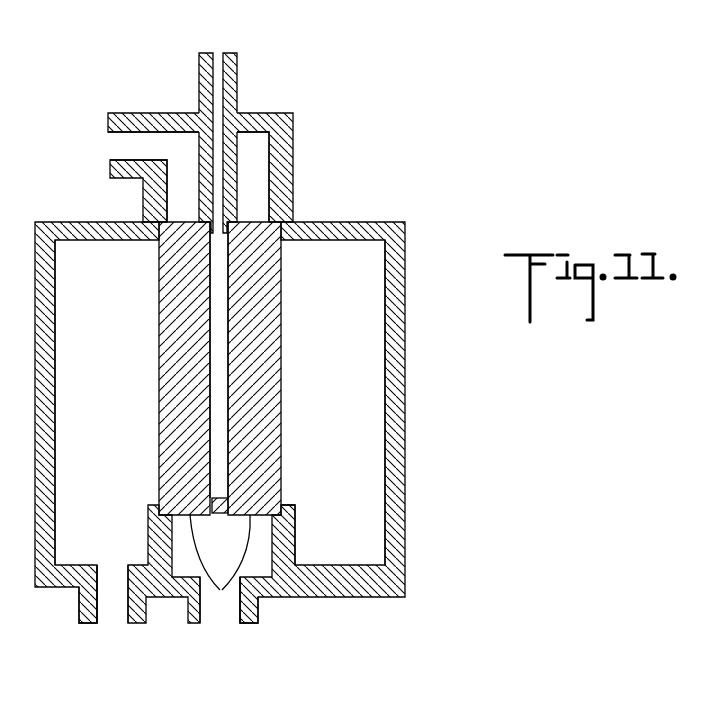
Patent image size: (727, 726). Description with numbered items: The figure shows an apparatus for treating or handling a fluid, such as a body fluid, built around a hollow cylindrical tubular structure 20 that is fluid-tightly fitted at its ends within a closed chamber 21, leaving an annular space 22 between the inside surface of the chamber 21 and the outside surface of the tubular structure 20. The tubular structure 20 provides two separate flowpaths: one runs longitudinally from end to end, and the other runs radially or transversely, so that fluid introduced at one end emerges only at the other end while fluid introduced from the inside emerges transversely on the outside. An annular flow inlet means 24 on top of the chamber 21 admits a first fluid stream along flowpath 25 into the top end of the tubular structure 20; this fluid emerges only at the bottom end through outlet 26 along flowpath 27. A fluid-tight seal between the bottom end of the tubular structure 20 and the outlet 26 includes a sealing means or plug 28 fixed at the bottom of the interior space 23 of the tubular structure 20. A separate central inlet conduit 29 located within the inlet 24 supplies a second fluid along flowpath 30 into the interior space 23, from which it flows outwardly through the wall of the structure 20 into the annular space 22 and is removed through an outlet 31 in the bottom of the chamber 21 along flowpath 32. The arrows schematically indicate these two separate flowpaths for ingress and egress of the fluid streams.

The tubular structure 20 is at (283, 292).
The closed chamber 21 is at (405, 403).
The annular space 22 is at (320, 357).
The interior space 23 is at (220, 400).
The annular flow inlet means 24 is at (135, 113).
The flowpath 25 is at (189, 194).
The outlet 26 is at (281, 433).
The flowpath 27 is at (222, 590).
The sealing means or plug 28 is at (224, 497).
The central inlet conduit 29 is at (240, 70).
The flowpath 30 is at (217, 68).
The outlet 31 is at (80, 610).
The flowpath 32 is at (159, 407).